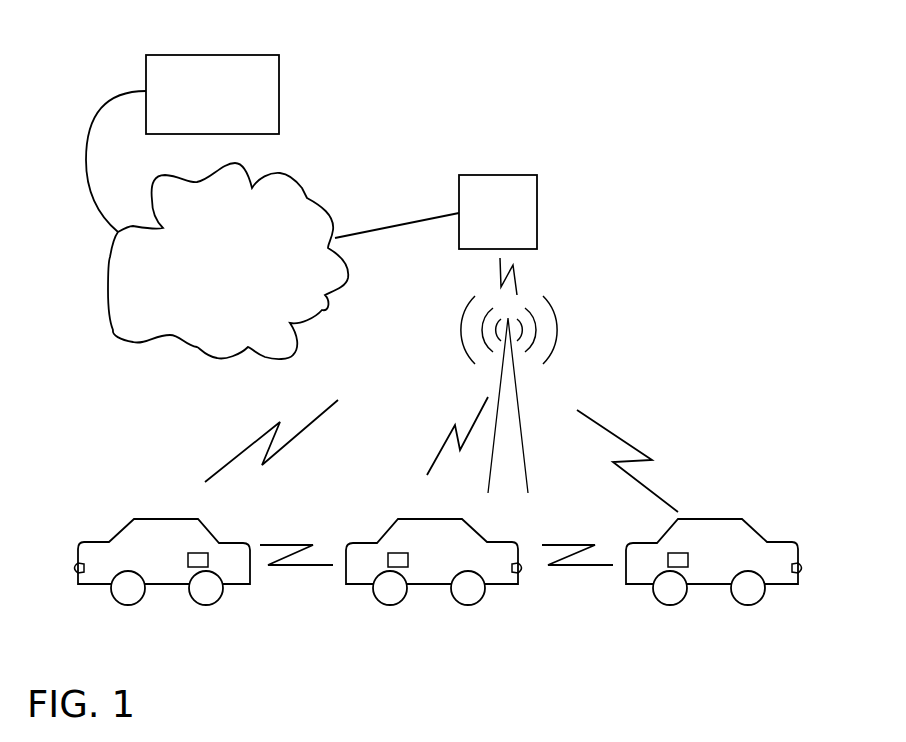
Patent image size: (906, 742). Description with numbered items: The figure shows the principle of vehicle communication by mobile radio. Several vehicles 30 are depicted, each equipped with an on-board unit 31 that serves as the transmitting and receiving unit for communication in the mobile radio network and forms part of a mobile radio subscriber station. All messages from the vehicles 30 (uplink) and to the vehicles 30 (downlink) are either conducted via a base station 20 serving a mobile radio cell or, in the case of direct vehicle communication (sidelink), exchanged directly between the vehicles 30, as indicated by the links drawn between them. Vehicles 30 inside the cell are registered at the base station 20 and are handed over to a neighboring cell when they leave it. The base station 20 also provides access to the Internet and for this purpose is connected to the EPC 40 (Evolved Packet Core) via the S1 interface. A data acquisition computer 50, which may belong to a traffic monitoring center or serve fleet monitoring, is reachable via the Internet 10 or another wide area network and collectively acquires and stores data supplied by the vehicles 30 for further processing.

The Internet 10 is at (305, 190).
The base station 20 is at (518, 412).
The vehicle 30 is at (108, 566).
The on-board unit 31 is at (193, 566).
The EPC (Evolved Packet Core) 40 is at (525, 202).
The data acquisition computer 50 is at (259, 97).